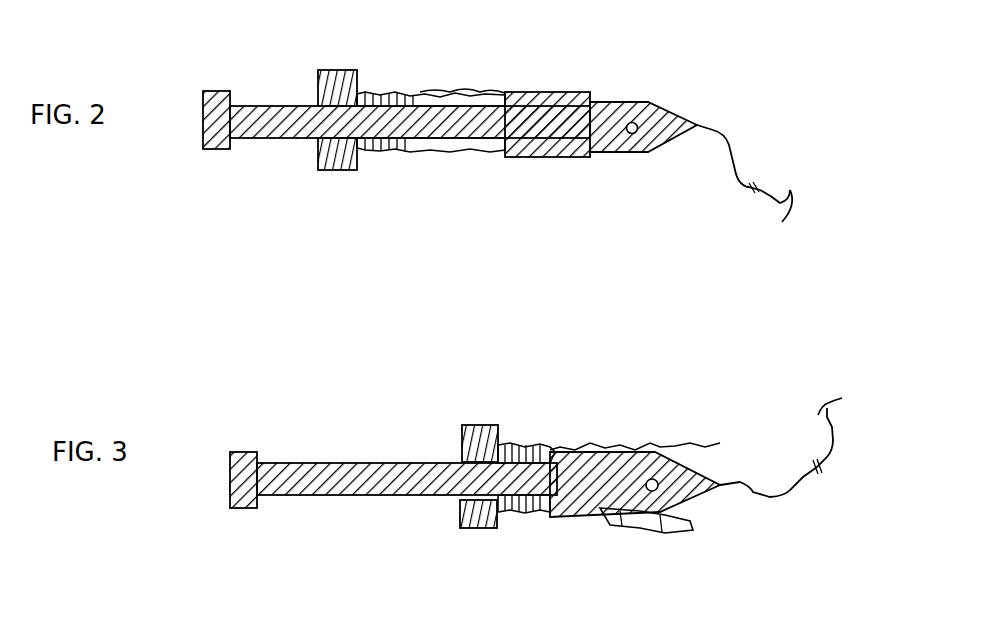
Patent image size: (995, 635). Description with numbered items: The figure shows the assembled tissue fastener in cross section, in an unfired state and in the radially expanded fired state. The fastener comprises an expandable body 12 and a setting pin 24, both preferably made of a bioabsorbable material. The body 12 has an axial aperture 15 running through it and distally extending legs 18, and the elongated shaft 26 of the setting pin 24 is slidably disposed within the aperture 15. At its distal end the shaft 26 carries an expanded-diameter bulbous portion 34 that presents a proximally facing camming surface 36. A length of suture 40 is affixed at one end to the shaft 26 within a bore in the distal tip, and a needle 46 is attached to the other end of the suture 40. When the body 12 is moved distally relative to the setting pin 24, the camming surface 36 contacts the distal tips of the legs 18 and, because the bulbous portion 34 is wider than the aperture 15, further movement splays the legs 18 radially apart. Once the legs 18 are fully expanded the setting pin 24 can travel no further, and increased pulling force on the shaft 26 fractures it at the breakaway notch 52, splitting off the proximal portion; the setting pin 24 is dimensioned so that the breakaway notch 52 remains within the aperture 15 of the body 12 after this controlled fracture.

In FIG. 2, the expandable body 12 is at (346, 128).
In FIG. 3, the expandable body 12 is at (480, 454).
In FIG. 2, the axial aperture 15 is at (318, 140).
In FIG. 3, the axial aperture 15 is at (459, 461).
In FIG. 2, the legs 18 is at (490, 93).
In FIG. 3, the legs 18 is at (623, 447).
In FIG. 2, the setting pin 24 is at (249, 177).
In FIG. 3, the setting pin 24 is at (299, 511).
In FIG. 2, the elongated shaft 26 is at (442, 153).
In FIG. 2, the bulbous portion 34 is at (613, 103).
In FIG. 3, the bulbous portion 34 is at (664, 521).
In FIG. 2, the camming surface 36 is at (557, 157).
In FIG. 3, the camming surface 36 is at (603, 516).
In FIG. 2, the suture 40 is at (733, 157).
In FIG. 3, the suture 40 is at (833, 445).
In FIG. 2, the needle 46 is at (792, 198).
In FIG. 3, the needle 46 is at (838, 404).
In FIG. 2, the breakaway notch 52 is at (458, 96).
In FIG. 3, the breakaway notch 52 is at (460, 513).